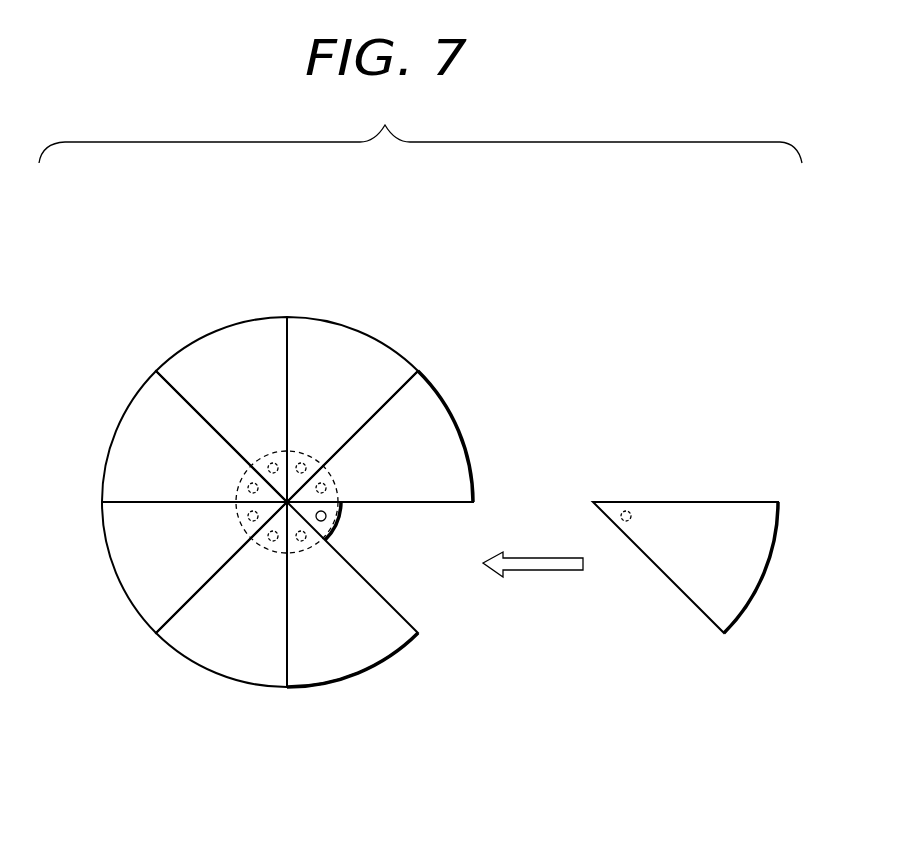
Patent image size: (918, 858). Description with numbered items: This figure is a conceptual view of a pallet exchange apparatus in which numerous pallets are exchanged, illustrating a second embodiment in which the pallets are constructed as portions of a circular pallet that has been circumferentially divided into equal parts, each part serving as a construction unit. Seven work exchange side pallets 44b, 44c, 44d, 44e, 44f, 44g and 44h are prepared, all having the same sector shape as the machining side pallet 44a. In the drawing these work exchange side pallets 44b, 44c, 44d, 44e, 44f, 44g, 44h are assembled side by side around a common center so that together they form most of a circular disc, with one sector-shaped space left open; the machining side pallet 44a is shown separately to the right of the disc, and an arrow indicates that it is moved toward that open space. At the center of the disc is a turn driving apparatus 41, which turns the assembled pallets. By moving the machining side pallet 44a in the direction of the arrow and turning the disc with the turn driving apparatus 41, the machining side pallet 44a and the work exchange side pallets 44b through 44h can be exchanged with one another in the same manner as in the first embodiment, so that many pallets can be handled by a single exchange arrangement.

The turn driving apparatus 41 is at (326, 516).
The machining side pallet 44a is at (668, 508).
The work exchange side pallet 44b is at (478, 462).
The work exchange side pallet 44c is at (383, 355).
The work exchange side pallet 44d is at (247, 330).
The work exchange side pallet 44e is at (135, 410).
The work exchange side pallet 44f is at (113, 540).
The work exchange side pallet 44g is at (192, 652).
The work exchange side pallet 44h is at (327, 680).